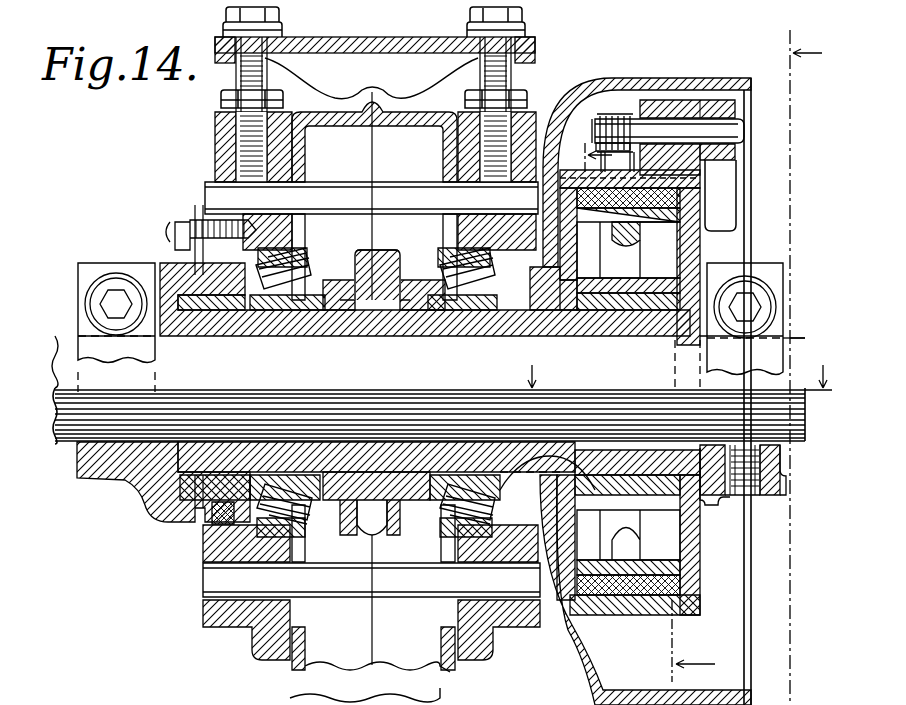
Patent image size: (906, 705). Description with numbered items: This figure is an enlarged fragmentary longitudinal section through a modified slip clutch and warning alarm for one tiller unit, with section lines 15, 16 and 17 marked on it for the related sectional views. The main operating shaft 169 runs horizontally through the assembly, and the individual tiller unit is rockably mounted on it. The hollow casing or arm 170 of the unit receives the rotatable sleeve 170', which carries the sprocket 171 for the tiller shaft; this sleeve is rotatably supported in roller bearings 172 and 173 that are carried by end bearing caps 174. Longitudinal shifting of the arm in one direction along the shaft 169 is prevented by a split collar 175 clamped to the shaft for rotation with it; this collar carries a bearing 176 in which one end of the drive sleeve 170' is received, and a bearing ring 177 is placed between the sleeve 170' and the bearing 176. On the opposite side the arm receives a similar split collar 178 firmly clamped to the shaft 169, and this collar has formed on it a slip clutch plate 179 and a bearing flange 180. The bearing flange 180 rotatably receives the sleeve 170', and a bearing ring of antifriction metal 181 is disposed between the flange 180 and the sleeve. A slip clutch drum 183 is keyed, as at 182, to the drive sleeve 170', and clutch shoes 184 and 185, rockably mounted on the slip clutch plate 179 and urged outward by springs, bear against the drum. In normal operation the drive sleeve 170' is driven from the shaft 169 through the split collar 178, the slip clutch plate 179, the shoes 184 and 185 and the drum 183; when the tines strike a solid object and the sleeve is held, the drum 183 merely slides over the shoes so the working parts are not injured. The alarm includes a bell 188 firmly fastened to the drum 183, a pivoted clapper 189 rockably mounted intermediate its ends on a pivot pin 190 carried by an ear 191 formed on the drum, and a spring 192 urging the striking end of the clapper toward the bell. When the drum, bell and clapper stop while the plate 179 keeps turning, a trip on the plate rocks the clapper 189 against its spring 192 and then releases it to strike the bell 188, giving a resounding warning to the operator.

The main operating shaft 169 is at (428, 390).
The hollow casing or arm 170 is at (371, 603).
The rotatable sleeve 170' is at (425, 314).
The sprocket 171 is at (386, 264).
The roller bearing 172 is at (300, 270).
The roller bearing 173 is at (436, 276).
The end bearing cap 174 is at (215, 142).
The split collar 175 is at (74, 314).
The bearing 176 is at (184, 264).
The bearing ring 177 is at (166, 512).
The split collar 178 is at (778, 333).
The slip clutch plate 179 is at (706, 234).
The bearing flange 180 is at (640, 270).
The bearing ring of antifriction metal 181 is at (664, 478).
The key 182 is at (534, 471).
The slip clutch drum 183 is at (696, 184).
The clutch shoe 184 is at (670, 200).
The clutch shoe 185 is at (662, 568).
The bell 188 is at (652, 82).
The pivoted clapper 189 is at (724, 209).
The pivot pin 190 is at (726, 130).
The ear 191 is at (683, 102).
The spring 192 is at (606, 116).
The section line 15- 15 is at (678, 366).
The section line 16- 16 is at (791, 367).
The section line 17- 17 is at (637, 412).